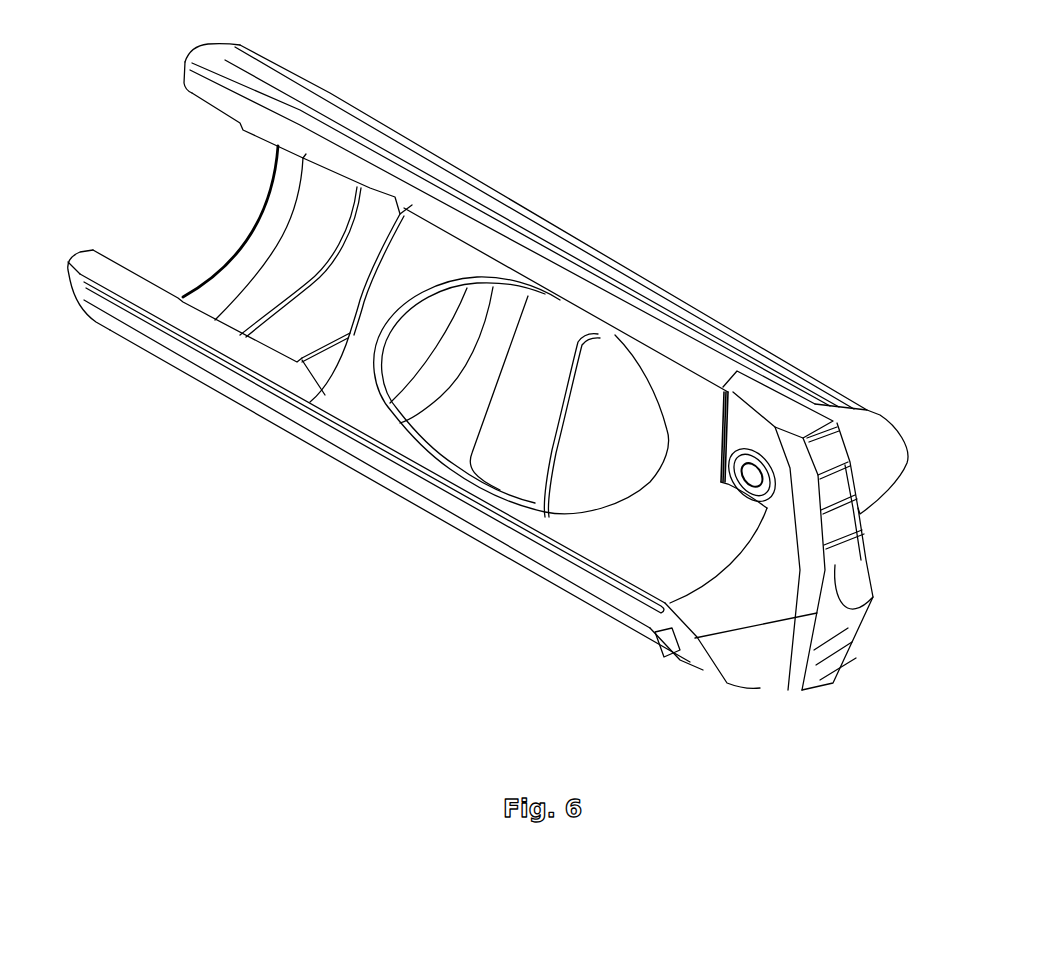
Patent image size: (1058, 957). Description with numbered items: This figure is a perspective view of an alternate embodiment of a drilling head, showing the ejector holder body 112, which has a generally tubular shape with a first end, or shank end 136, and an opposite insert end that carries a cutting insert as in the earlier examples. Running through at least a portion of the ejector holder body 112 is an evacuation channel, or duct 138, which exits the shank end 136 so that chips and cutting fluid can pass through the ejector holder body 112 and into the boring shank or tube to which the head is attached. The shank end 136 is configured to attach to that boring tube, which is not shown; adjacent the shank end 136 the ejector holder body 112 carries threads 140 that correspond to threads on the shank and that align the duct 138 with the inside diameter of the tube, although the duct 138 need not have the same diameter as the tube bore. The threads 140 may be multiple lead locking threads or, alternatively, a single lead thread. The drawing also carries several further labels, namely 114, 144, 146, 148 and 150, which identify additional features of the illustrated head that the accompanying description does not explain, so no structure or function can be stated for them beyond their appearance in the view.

The ejector holder body 112 is at (499, 345).
The fastener screw 114 is at (745, 435).
The shank end 136 is at (242, 50).
The duct 138 is at (298, 193).
The threads 140 is at (265, 297).
The flat intermediate face 144 is at (402, 263).
The rail guide face 146 is at (453, 212).
The clamp lever 148 is at (865, 402).
The cylindrical cavity 150 is at (593, 452).